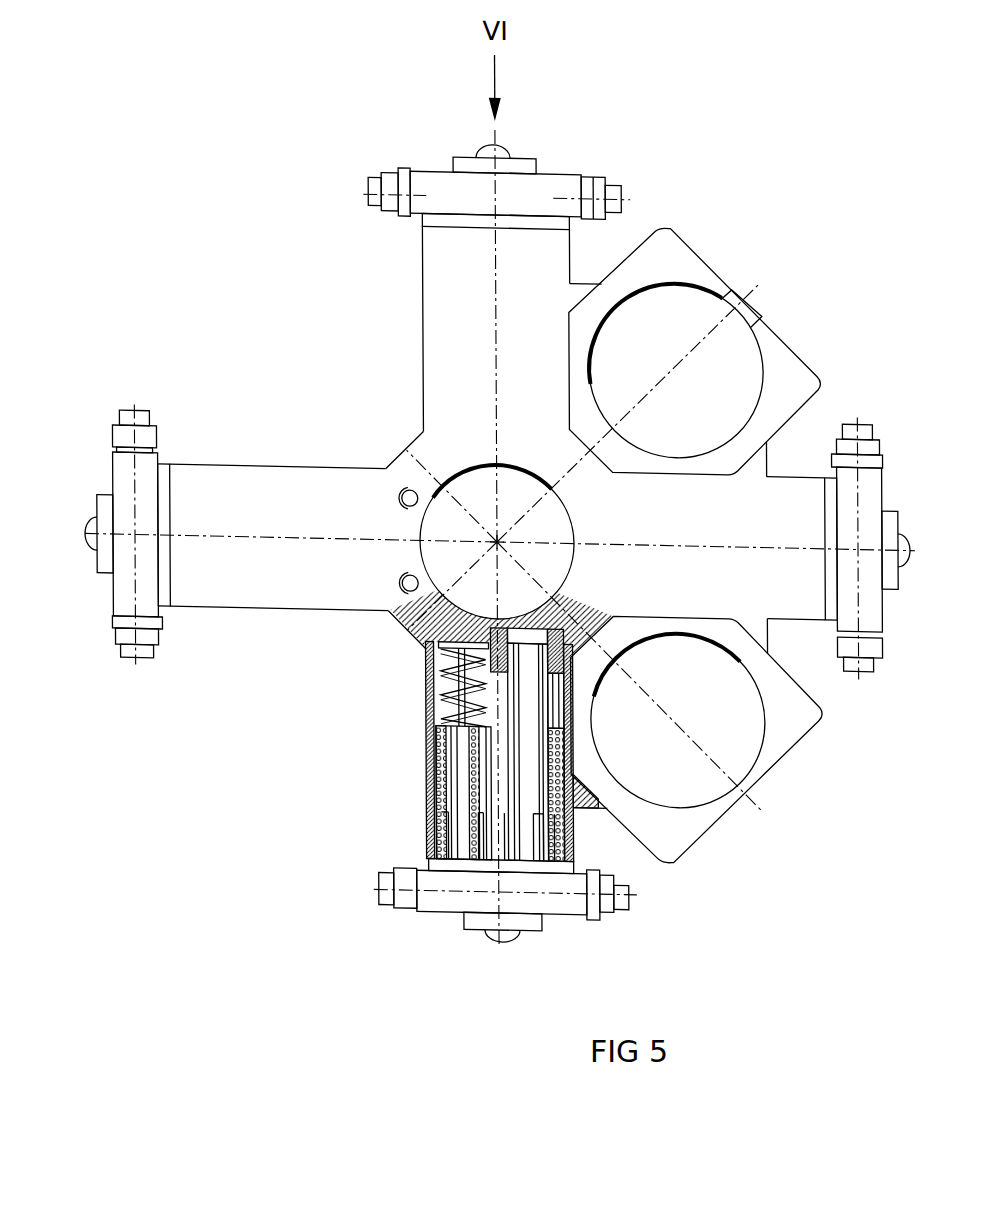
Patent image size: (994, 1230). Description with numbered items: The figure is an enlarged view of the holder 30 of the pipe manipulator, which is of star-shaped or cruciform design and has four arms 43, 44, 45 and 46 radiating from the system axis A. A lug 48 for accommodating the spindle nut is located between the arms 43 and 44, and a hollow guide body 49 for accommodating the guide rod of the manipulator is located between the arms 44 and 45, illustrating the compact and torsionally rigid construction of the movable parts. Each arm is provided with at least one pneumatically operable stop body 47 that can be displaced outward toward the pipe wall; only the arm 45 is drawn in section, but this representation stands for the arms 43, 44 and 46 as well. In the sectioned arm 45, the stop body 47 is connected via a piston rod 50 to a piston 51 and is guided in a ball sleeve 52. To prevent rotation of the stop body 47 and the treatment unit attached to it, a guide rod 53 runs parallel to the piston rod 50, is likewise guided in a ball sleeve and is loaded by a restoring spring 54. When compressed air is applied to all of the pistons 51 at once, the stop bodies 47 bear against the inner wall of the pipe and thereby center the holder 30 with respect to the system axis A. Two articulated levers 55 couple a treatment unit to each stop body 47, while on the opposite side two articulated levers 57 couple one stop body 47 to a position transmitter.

The holder 30 is at (357, 383).
The system axis A is at (500, 534).
The arm 43 is at (482, 346).
The arm 44 is at (792, 529).
The arm 45 is at (412, 814).
The arm 46 is at (229, 526).
The stop body 47 is at (512, 149).
The lug 48 is at (713, 257).
The hollow guide body 49 is at (797, 742).
The piston rod 50 is at (540, 711).
The piston 51 is at (579, 638).
The ball sleeve 52 is at (540, 751).
The guide rod 53 is at (458, 750).
The restoring spring 54 is at (440, 694).
The articulated lever 55 is at (398, 180).
The articulated lever 57 is at (405, 911).